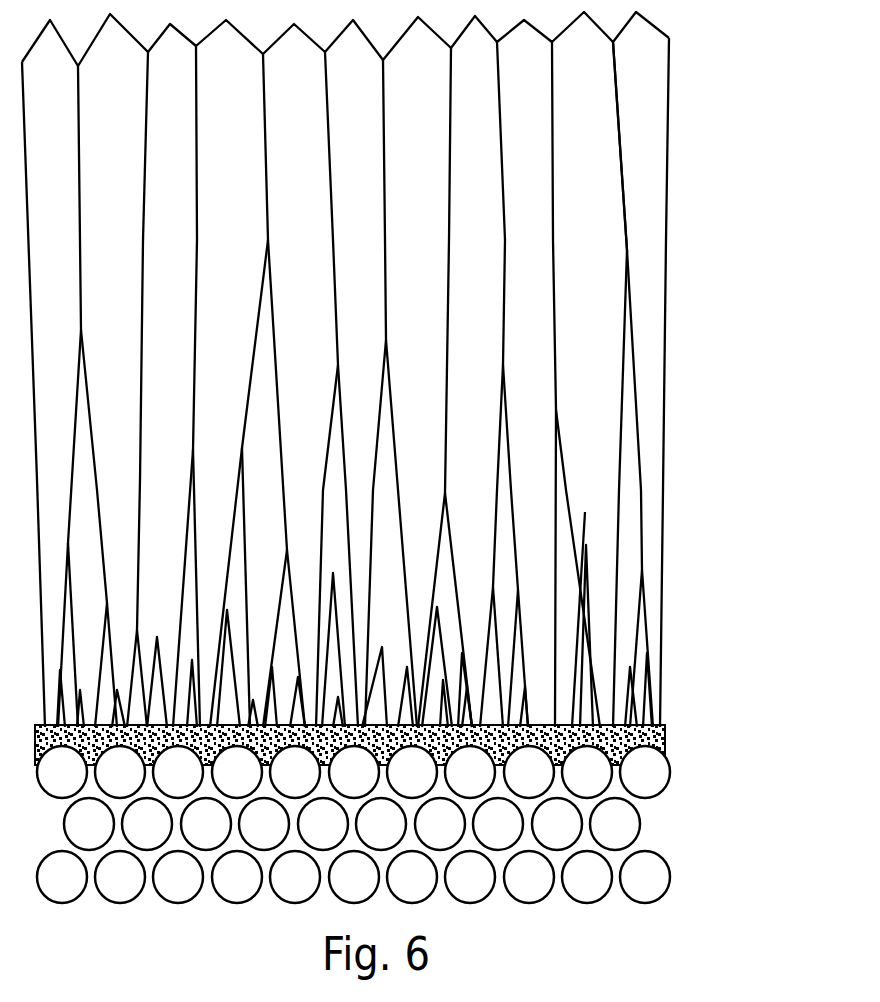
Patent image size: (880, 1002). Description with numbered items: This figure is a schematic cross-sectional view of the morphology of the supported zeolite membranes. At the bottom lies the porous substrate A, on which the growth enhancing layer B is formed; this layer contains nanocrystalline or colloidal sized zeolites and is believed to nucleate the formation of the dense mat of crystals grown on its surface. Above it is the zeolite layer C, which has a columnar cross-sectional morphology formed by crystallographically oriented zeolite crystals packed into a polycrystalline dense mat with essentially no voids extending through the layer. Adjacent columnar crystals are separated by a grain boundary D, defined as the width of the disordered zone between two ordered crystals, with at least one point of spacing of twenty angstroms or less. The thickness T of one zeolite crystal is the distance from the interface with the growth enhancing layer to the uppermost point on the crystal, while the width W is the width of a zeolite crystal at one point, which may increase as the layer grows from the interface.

The porous substrate A is at (672, 811).
The growth enhancing layer B is at (677, 715).
The zeolite layer C is at (690, 355).
The grain boundary D is at (630, 128).
The thickness of one zeolite crystal T is at (51, 712).
The width of a zeolite crystal W is at (386, 136).